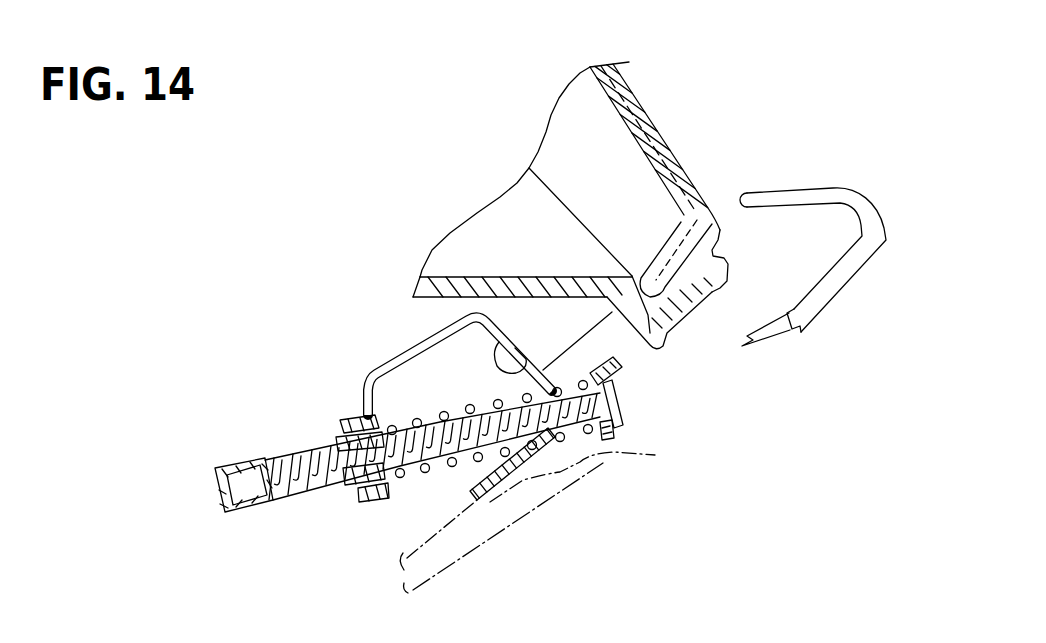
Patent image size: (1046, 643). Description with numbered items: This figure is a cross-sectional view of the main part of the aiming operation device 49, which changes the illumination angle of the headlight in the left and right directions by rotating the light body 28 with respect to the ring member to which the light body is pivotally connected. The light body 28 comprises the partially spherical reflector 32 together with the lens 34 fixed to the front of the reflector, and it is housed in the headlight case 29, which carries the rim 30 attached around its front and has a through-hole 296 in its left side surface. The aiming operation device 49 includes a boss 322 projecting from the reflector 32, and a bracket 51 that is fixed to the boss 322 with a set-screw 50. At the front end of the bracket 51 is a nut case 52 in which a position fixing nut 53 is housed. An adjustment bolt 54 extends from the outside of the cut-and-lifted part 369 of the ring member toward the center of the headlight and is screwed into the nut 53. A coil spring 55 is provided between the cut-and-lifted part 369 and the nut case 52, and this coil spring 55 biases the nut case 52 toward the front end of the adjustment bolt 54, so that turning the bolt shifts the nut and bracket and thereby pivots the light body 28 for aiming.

The light body 28 is at (680, 96).
The lens 34 is at (673, 140).
The reflector 32 is at (447, 297).
The rim 30 is at (832, 193).
The boss 322 is at (587, 317).
The bracket 51 is at (395, 363).
The set-screw 50 is at (497, 362).
The position fixing nut 53 is at (340, 440).
The nut case 52 is at (370, 502).
The adjustment bolt 54 is at (310, 482).
The coil spring 55 is at (423, 474).
The cut-and-lifted part 369 is at (622, 432).
The through-hole 296 is at (655, 455).
The headlight case 29 is at (514, 524).
The aiming operation device 49 is at (246, 541).